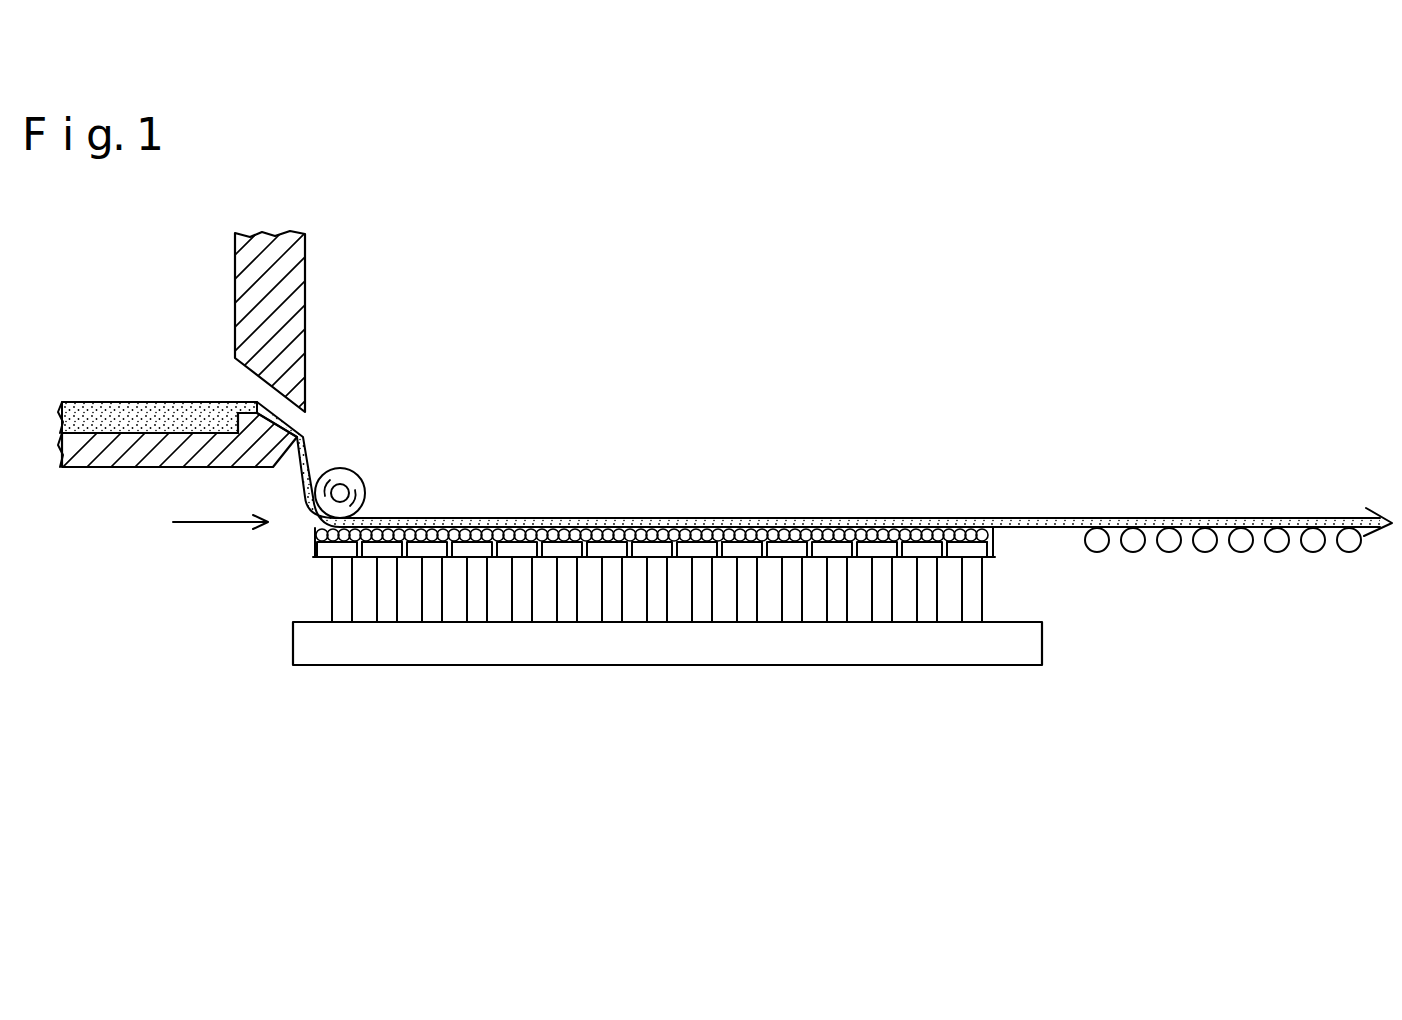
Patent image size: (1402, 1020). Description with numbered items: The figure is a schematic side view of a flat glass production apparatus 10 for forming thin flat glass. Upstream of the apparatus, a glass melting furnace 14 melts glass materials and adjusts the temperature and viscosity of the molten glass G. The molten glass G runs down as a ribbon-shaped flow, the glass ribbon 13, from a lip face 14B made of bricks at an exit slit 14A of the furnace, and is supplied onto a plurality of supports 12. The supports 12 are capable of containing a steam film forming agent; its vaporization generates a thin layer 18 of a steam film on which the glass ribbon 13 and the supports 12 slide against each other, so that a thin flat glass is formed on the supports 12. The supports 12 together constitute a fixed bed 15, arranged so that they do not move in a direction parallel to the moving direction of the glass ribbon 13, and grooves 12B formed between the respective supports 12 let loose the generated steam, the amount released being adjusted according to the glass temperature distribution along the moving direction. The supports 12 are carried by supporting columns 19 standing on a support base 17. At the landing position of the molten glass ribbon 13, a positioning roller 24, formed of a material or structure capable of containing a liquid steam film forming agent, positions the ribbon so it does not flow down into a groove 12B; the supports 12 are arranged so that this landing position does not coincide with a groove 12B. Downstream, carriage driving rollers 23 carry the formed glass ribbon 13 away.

The glass G is at (120, 408).
The flat glass production apparatus 10 is at (618, 441).
The supports 12 is at (522, 553).
The grooves 12B is at (588, 557).
The glass ribbon 13 is at (633, 524).
The glass melting furnace 14 is at (308, 328).
The exit slit 14A is at (268, 396).
The lip face 14B is at (302, 427).
The fixed bed 15 is at (313, 545).
The support base 17 is at (554, 645).
The thin layer of a steam film 18 is at (933, 530).
The supporting columns 19 is at (333, 597).
The carriage driving rollers 23 is at (1255, 555).
The positioning roller 24 is at (358, 481).